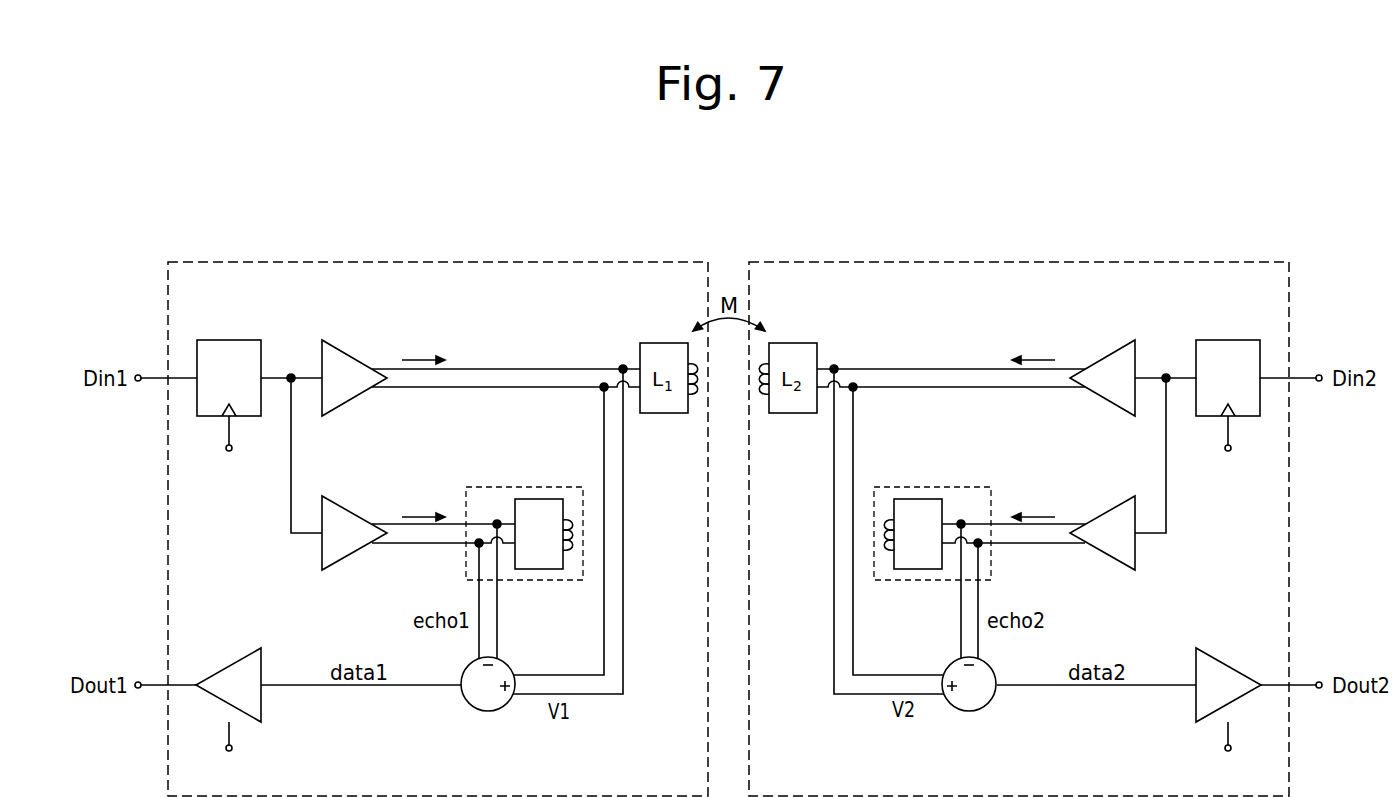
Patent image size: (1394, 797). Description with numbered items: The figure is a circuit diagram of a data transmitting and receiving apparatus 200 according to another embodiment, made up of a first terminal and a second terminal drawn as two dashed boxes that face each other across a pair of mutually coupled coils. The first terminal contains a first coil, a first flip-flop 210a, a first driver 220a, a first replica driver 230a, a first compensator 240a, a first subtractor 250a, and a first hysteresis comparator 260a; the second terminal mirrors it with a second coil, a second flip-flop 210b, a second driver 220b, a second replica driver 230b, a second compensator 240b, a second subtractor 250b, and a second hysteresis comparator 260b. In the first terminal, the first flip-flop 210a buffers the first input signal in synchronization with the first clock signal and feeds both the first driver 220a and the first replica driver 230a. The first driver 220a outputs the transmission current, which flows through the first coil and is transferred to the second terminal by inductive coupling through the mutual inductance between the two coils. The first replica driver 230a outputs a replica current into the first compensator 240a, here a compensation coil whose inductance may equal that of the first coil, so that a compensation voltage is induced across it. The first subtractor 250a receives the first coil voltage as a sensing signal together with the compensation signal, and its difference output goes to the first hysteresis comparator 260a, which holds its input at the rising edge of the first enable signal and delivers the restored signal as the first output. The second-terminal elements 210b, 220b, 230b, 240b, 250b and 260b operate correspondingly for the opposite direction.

The data transmitting and receiving apparatus 200 is at (747, 216).
The first flip-flop 210a is at (222, 339).
The second flip-flop 210b is at (1235, 339).
The first driver 220a is at (343, 352).
The second driver 220b is at (1114, 352).
The first replica driver 230a is at (343, 505).
The second replica driver 230b is at (1114, 505).
The first compensator 240a is at (534, 487).
The second compensator 240b is at (924, 487).
The first subtractor 250a is at (488, 712).
The second subtractor 250b is at (969, 712).
The first hysteresis comparator 260a is at (262, 705).
The second hysteresis comparator 260b is at (1195, 705).